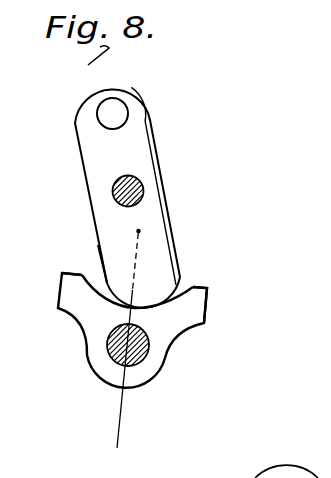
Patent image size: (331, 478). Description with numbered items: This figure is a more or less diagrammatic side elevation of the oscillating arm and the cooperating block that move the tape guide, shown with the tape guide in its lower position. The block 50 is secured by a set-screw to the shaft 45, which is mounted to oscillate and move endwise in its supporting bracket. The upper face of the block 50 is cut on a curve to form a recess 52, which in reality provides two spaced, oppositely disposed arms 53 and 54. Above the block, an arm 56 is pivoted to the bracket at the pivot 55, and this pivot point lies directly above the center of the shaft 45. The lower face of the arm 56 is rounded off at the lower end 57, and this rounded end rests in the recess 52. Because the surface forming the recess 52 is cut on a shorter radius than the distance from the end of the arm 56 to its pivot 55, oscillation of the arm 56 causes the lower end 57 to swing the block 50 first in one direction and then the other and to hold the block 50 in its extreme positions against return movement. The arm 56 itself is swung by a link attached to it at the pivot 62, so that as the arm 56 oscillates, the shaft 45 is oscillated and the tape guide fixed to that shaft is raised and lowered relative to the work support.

The shaft 45 is at (137, 344).
The block 50 is at (152, 368).
The recess 52 is at (97, 287).
The arm 53 is at (85, 277).
The arm 54 is at (185, 283).
The pivot 55 is at (143, 184).
The arm 56 is at (142, 142).
The rounded lower end 57 is at (115, 297).
The pivot 62 is at (110, 112).